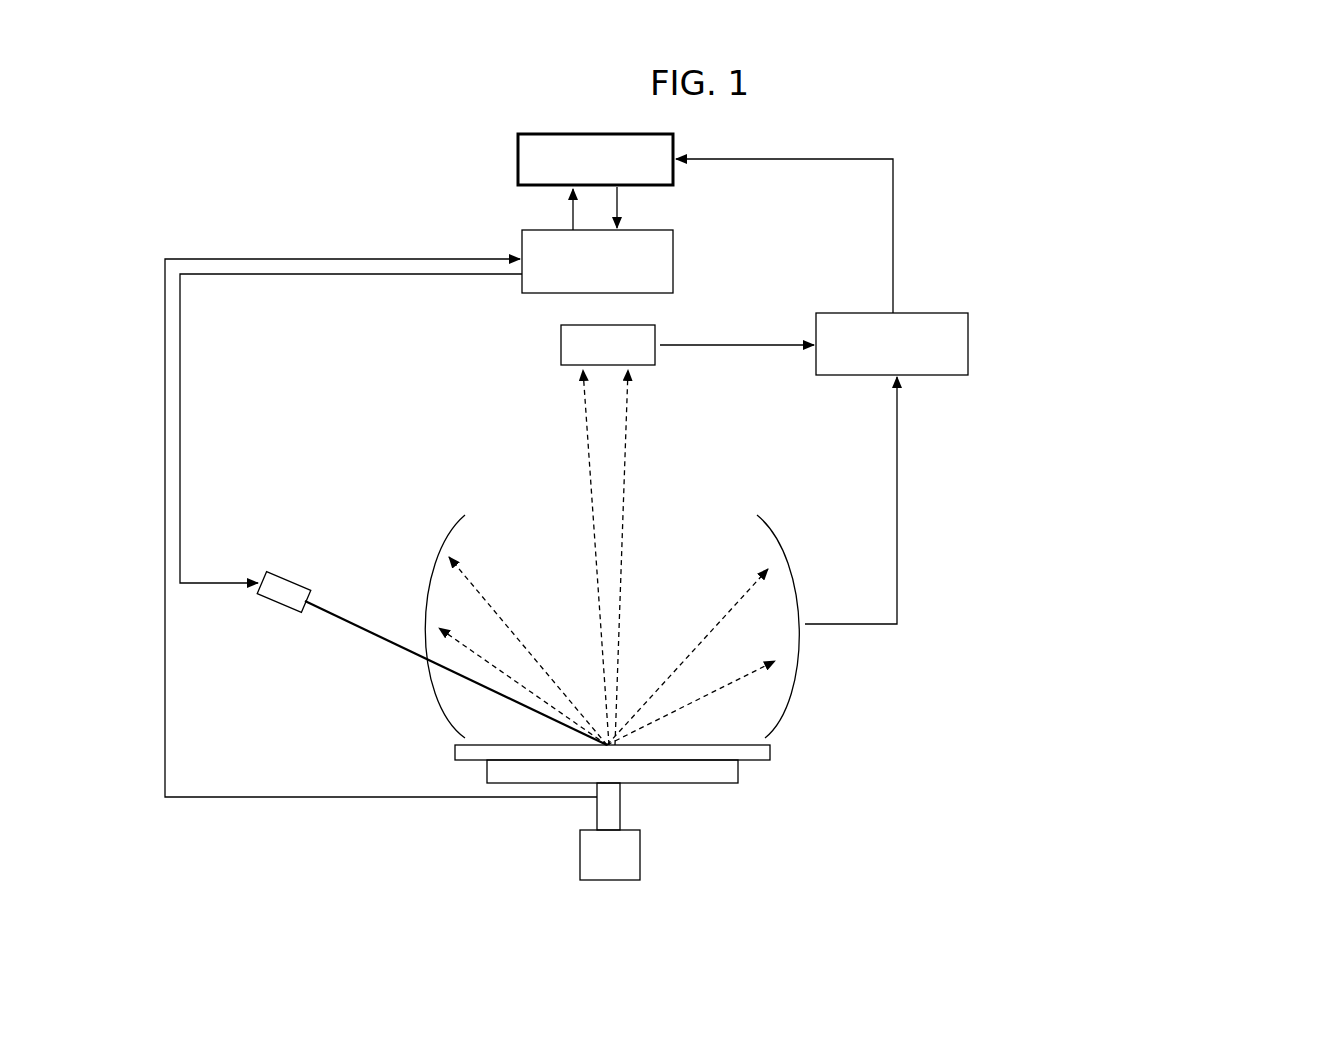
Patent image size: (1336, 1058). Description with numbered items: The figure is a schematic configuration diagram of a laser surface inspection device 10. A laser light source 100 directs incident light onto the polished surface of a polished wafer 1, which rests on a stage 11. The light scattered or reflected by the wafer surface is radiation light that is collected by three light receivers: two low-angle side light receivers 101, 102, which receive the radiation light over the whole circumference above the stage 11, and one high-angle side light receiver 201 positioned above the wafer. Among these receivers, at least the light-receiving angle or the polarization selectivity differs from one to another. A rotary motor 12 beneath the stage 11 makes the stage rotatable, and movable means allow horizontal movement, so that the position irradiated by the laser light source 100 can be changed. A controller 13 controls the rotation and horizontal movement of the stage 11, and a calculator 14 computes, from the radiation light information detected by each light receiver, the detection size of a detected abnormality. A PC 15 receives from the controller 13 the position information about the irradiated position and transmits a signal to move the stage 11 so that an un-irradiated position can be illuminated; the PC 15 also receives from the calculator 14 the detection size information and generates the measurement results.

The surface inspection device 10 is at (1058, 445).
The PC 15 is at (595, 159).
The controller 13 is at (597, 261).
The calculator 14 is at (892, 344).
The high-angle side light receiver 201 is at (571, 351).
The low-angle side light receiver 101 is at (812, 626).
The low-angle side light receiver 102 is at (807, 661).
The laser light source 100 is at (282, 592).
The polished wafer 1 is at (753, 752).
The stage 11 is at (715, 775).
The rotary motor 12 is at (610, 811).